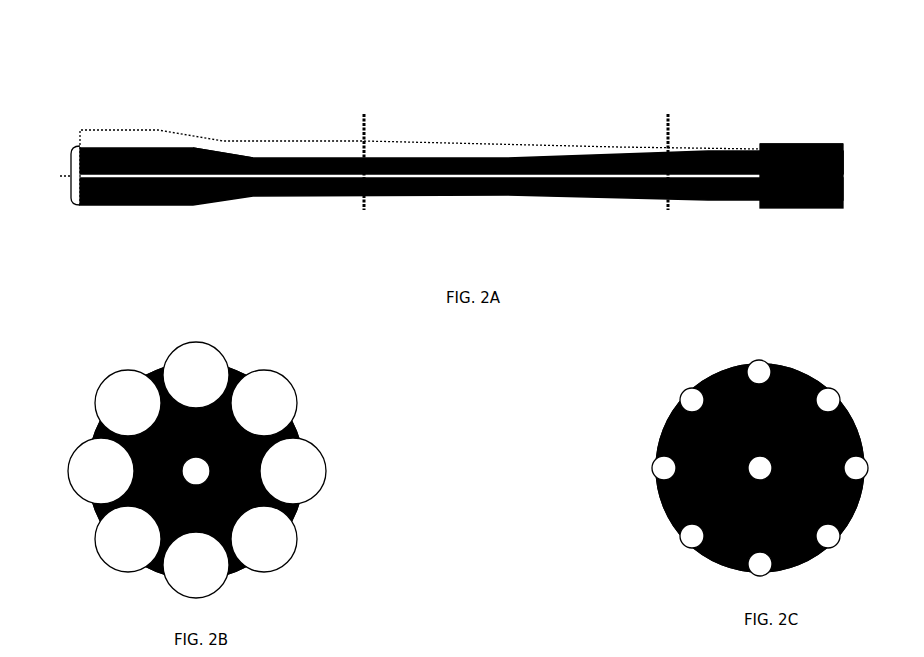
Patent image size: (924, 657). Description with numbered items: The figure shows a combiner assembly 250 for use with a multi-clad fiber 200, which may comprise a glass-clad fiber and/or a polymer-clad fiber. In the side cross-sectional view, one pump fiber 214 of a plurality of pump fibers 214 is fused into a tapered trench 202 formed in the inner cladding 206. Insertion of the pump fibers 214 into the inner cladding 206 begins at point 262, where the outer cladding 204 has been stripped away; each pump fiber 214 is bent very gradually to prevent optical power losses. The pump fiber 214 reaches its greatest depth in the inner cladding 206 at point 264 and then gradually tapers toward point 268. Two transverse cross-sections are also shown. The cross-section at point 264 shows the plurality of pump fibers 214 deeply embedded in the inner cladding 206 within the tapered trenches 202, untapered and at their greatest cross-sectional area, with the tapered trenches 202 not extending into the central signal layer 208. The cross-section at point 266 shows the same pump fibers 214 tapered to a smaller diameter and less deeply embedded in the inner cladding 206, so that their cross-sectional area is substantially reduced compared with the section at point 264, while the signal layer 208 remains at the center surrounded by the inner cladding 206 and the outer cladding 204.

In FIG. 2A, the multi-clad fiber 200 is at (55, 175).
In FIG. 2A, the tapered trench 202 is at (392, 148).
In FIG. 2B, the tapered trench 202 is at (240, 414).
In FIG. 2C, the tapered trench 202 is at (752, 368).
In FIG. 2A, the outer cladding 204 is at (800, 136).
In FIG. 2B, the outer cladding 204 is at (228, 364).
In FIG. 2C, the outer cladding 204 is at (655, 500).
In FIG. 2A, the inner cladding 206 is at (836, 157).
In FIG. 2B, the inner cladding 206 is at (152, 352).
In FIG. 2C, the inner cladding 206 is at (712, 360).
In FIG. 2A, the signal layer 208 is at (837, 170).
In FIG. 2B, the signal layer 208 is at (194, 460).
In FIG. 2C, the signal layer 208 is at (748, 460).
In FIG. 2A, the pump fiber 214 is at (128, 121).
In FIG. 2B, the pump fiber 214 is at (197, 470).
In FIG. 2C, the pump fiber 214 is at (672, 386).
In FIG. 2A, the combiner assembly 250 is at (322, 62).
In FIG. 2B, the combiner assembly 250 is at (197, 319).
In FIG. 2C, the combiner assembly 250 is at (723, 308).
In FIG. 2A, the point 262 is at (210, 140).
In FIG. 2A, the point 264 is at (352, 112).
In FIG. 2A, the point 266 is at (656, 112).
In FIG. 2A, the point 268 is at (750, 136).